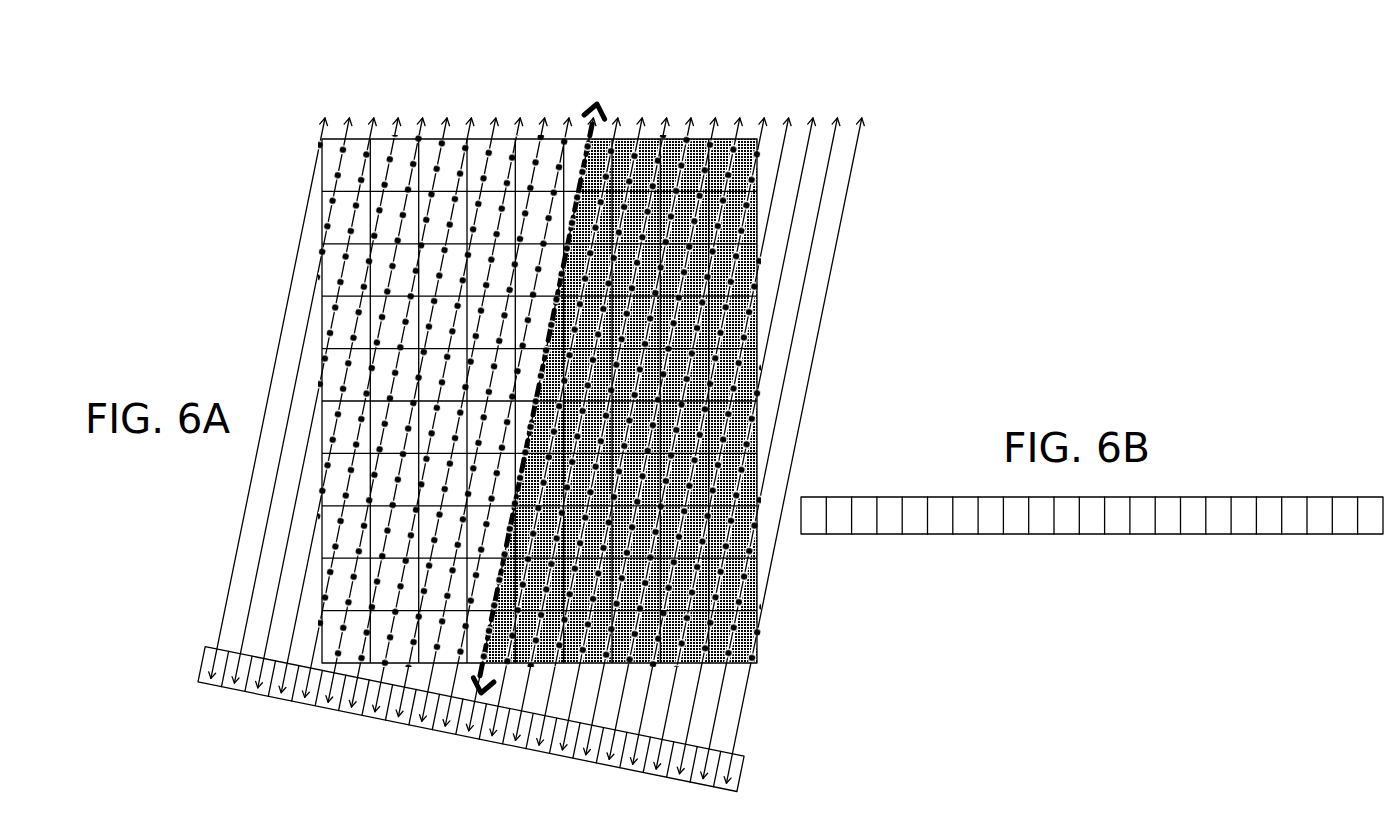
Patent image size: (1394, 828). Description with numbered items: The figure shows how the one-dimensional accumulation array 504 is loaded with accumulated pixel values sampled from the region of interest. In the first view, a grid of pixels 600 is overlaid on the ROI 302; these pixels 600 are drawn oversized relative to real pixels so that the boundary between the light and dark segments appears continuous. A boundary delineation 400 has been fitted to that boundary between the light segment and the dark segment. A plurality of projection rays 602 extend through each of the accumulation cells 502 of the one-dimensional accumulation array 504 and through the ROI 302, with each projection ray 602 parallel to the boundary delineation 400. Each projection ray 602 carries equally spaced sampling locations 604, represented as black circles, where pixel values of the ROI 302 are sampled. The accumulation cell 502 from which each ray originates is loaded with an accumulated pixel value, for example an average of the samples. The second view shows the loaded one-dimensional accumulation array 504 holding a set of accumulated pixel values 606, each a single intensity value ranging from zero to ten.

In FIG. 6A, the ROI 302 is at (372, 95).
In FIG. 6A, the boundary delineation 400 is at (593, 106).
In FIG. 6A, the accumulation cells 502 is at (257, 694).
In FIG. 6A, the one-dimensional accumulation array 504 is at (209, 644).
In FIG. 6B, the one-dimensional accumulation array 504 is at (1019, 557).
In FIG. 6A, the pixels 600 is at (533, 139).
In FIG. 6A, the projection rays 602 is at (665, 120).
In FIG. 6A, the sampling locations 604 is at (317, 278).
In FIG. 6B, the accumulated pixel values 606 is at (1167, 520).